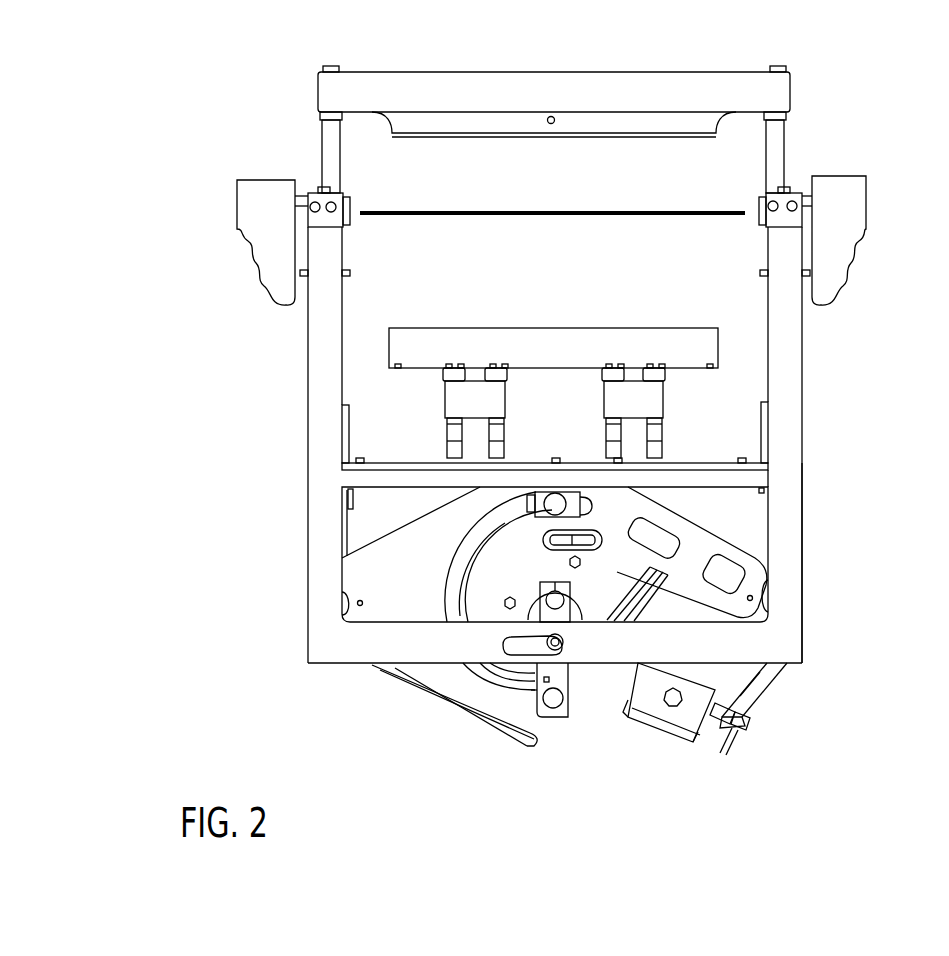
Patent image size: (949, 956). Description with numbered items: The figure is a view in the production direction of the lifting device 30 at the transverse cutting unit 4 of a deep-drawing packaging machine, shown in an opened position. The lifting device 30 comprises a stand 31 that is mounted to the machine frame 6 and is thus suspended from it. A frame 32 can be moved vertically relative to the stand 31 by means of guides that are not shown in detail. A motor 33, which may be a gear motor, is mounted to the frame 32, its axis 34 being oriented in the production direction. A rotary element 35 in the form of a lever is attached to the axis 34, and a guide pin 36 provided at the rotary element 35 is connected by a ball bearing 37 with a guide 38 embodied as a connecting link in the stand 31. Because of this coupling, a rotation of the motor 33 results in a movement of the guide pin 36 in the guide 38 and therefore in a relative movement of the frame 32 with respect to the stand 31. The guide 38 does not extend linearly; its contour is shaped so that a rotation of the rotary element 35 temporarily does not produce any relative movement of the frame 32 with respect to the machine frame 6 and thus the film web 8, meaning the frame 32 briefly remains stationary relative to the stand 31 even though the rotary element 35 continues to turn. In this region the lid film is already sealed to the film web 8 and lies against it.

The lifting device 30 is at (868, 83).
The transverse cutting unit 4 is at (812, 380).
The machine frame 6 is at (256, 210).
The film web 8 is at (670, 212).
The frame 32 is at (358, 578).
The stand 31 is at (793, 578).
The motor 33 is at (683, 607).
The axis 34 is at (566, 606).
The rotary element 35 is at (543, 672).
The guide pin 36 is at (560, 652).
The ball bearing 37 is at (553, 708).
The guide 38 is at (505, 642).